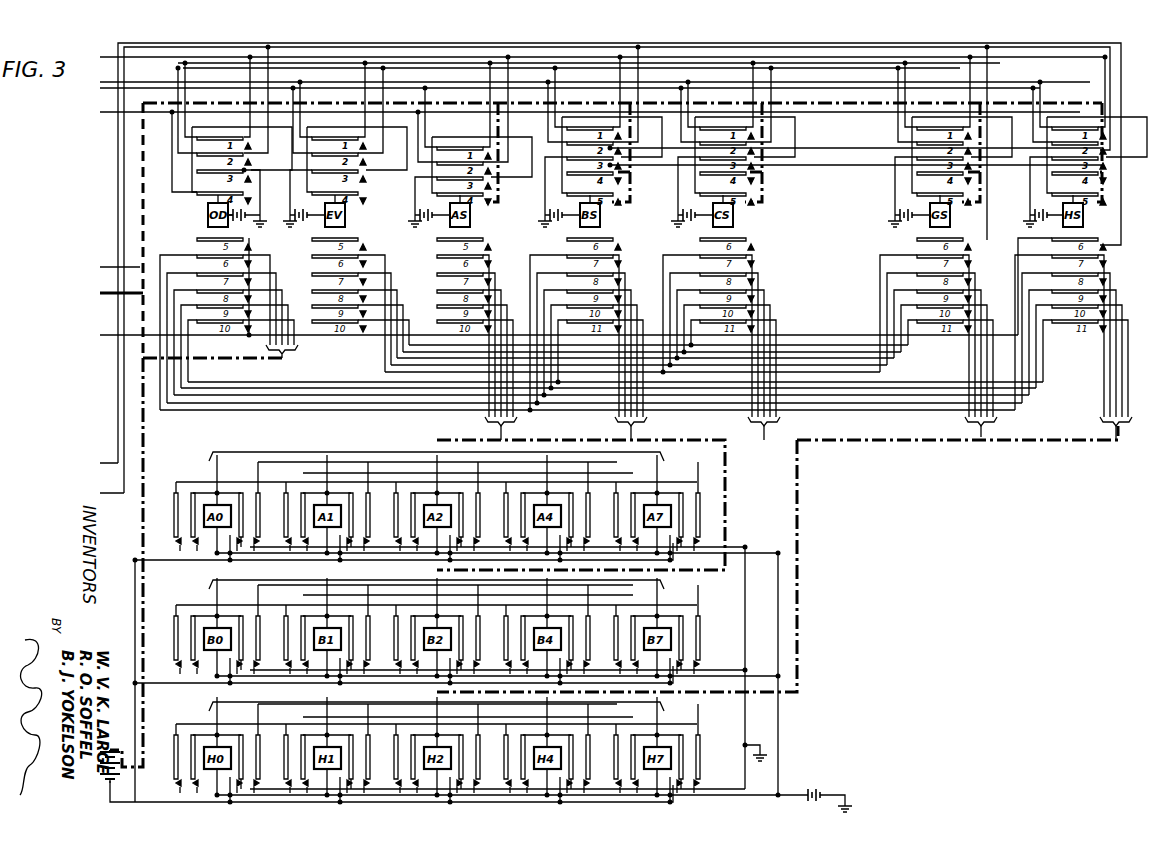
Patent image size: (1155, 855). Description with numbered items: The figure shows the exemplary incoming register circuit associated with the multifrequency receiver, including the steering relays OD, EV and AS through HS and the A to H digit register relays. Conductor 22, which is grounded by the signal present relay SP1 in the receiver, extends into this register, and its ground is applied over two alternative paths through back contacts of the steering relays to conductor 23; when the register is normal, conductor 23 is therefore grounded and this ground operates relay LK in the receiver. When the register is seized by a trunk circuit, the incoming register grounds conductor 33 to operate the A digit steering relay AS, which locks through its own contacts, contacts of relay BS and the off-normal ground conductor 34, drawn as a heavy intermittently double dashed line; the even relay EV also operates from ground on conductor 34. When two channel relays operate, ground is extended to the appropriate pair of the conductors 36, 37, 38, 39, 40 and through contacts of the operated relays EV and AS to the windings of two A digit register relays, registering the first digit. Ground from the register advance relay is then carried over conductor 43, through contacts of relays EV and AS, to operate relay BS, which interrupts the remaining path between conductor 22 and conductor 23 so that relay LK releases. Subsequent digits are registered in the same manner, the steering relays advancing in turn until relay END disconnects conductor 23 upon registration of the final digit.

The conductor 22 is at (104, 334).
The conductor 23 is at (958, 46).
The conductor 33 is at (112, 56).
The off-normal ground conductor 34 is at (144, 207).
The conductor 36 is at (117, 802).
The conductor 37 is at (112, 783).
The conductor 38 is at (113, 751).
The conductor 39 is at (108, 756).
The conductor 40 is at (114, 762).
The conductor 43 is at (110, 80).